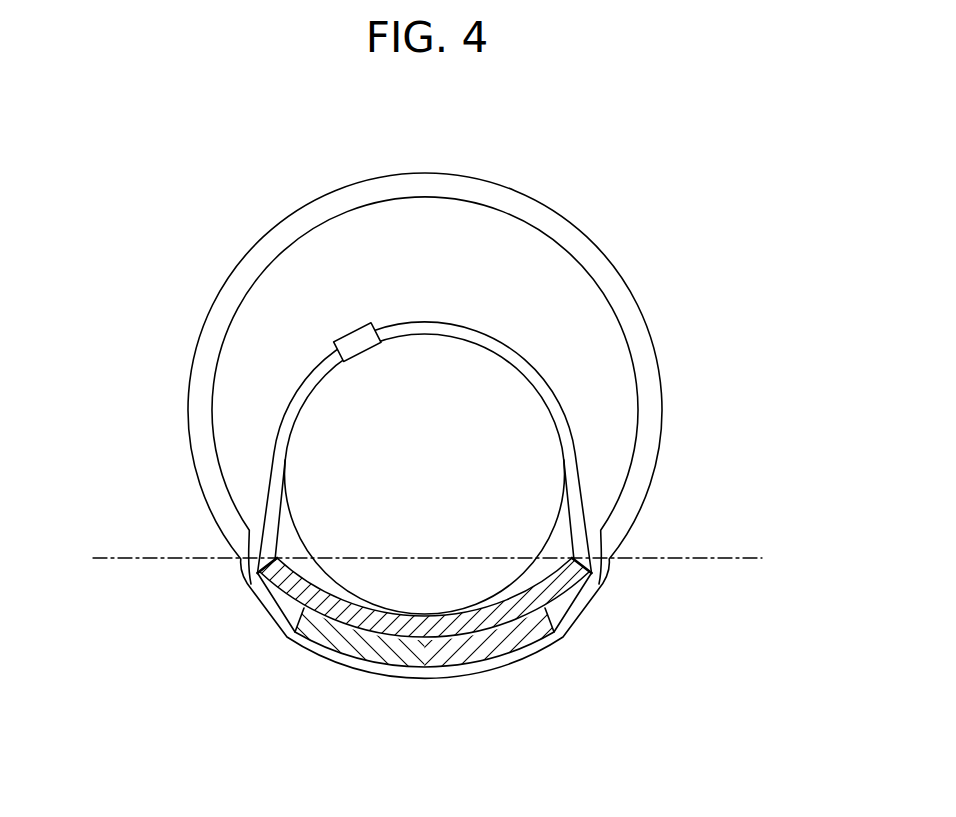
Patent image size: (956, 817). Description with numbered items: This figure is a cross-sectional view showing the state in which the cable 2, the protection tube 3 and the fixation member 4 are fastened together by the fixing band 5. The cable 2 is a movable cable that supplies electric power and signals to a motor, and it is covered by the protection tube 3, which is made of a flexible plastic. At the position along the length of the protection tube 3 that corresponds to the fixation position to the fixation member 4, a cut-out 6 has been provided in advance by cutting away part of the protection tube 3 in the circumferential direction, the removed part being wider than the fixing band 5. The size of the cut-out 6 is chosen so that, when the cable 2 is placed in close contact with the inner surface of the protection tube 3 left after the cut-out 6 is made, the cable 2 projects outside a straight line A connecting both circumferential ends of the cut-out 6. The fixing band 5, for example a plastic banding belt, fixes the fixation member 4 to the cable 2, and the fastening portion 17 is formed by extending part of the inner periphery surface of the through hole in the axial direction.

The cable 2 is at (565, 508).
The protection tube 3 is at (662, 372).
The fixation member 4 is at (493, 682).
The fixing band 5 is at (447, 323).
The cut-out 6 is at (602, 270).
The fastening portion 17 is at (414, 668).
The straight line A is at (122, 548).